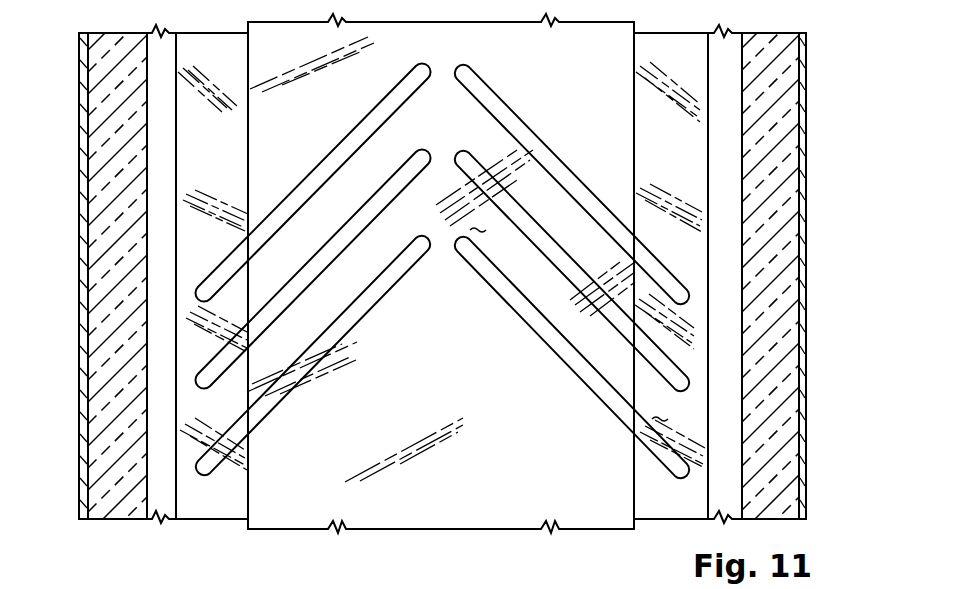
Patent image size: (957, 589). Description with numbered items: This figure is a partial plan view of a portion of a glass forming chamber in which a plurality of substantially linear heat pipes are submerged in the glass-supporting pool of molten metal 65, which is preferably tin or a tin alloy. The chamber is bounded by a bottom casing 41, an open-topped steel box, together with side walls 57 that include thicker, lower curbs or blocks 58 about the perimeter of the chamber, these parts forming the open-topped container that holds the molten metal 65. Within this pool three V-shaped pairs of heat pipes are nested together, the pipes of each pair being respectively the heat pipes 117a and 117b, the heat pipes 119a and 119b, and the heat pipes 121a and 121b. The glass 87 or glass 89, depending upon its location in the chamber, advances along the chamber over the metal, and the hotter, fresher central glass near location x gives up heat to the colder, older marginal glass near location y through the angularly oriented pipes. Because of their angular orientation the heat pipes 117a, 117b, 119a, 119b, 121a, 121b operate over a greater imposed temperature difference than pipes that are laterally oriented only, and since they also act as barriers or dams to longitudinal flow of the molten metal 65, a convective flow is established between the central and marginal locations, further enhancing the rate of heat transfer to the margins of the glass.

The bottom casing 41 is at (803, 77).
The side walls 57 is at (118, 33).
The blocks 58 is at (796, 277).
The pool of molten metal 65 is at (221, 33).
The glass 87 is at (457, 273).
The glass 89 is at (474, 492).
The heat pipe 117a is at (403, 80).
The heat pipe 117b is at (493, 90).
The heat pipe 119a is at (207, 366).
The heat pipe 119b is at (680, 370).
The heat pipe 121a is at (214, 444).
The heat pipe 121b is at (662, 433).